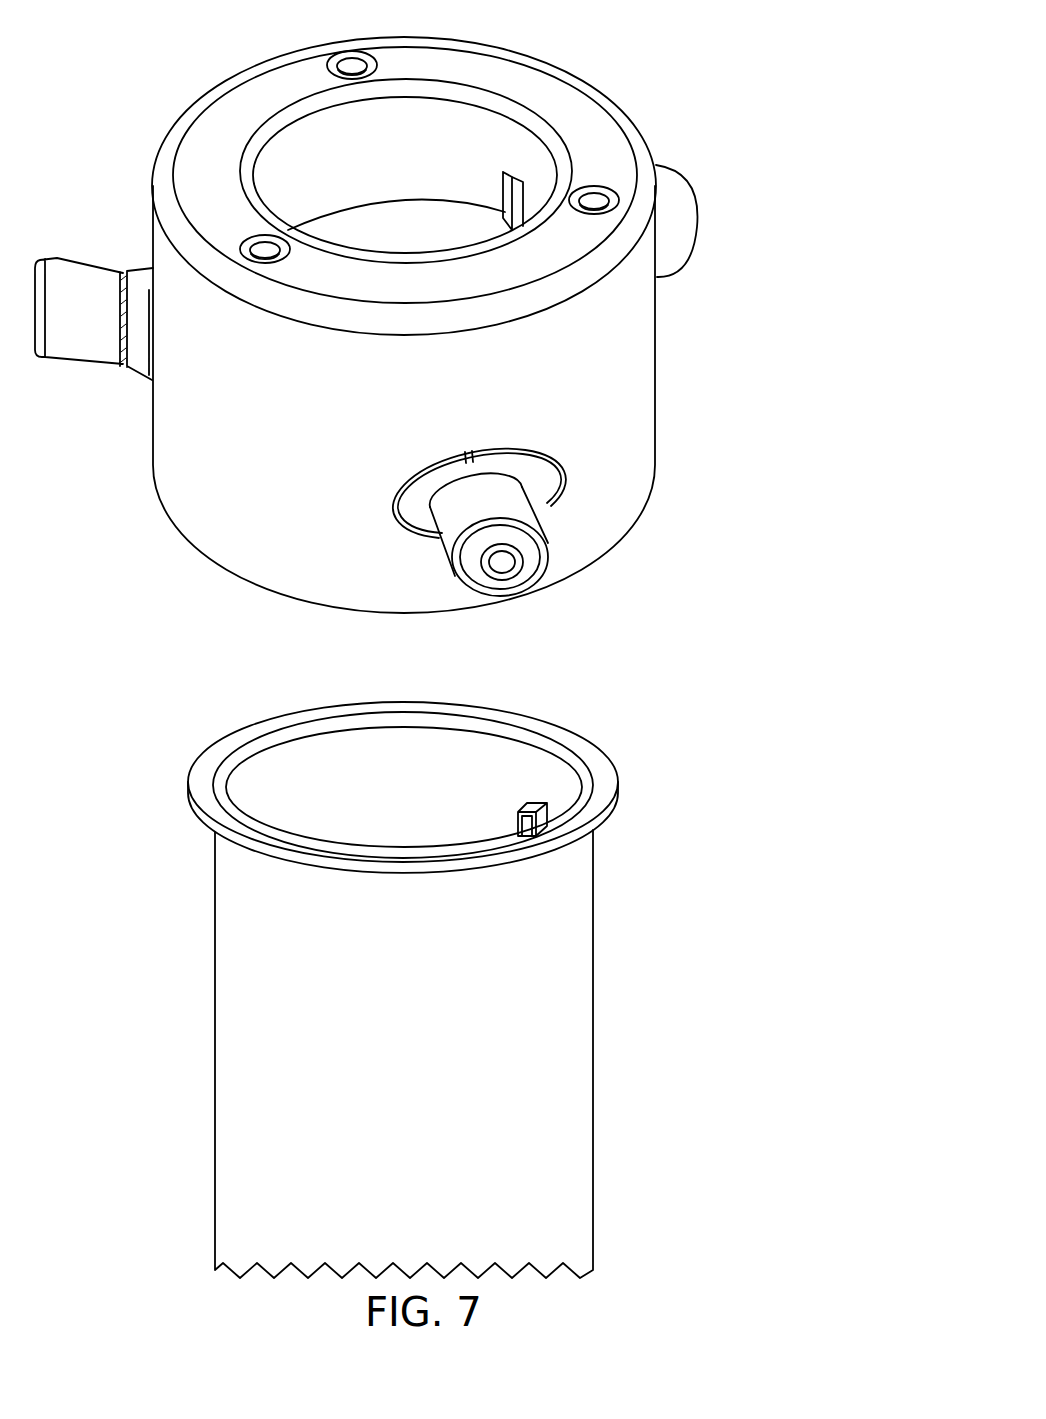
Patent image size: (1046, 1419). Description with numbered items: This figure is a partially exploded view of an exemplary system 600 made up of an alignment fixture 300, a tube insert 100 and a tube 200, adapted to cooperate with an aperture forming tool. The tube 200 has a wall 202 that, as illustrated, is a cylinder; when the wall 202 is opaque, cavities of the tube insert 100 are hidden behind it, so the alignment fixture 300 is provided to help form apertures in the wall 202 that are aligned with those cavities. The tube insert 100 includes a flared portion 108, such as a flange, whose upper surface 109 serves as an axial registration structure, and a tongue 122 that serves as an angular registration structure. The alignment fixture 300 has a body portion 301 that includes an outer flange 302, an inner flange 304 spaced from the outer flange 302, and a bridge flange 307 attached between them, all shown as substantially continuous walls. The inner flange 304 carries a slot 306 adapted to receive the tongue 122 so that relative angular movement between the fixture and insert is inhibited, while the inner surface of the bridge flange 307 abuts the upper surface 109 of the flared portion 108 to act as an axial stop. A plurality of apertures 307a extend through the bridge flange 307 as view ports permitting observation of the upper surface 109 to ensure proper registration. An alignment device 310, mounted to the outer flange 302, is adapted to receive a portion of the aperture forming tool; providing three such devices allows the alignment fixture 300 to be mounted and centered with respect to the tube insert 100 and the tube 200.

The system 600 is at (807, 727).
The alignment fixture 300 is at (680, 368).
The body portion 301 is at (657, 295).
The outer flange 302 is at (155, 440).
The inner flange 304 is at (393, 198).
The slot 306 is at (503, 192).
The bridge flange 307 is at (512, 72).
The apertures 307a is at (350, 67).
The alignment device 310 is at (563, 558).
The tube insert 100 is at (585, 713).
The flared portion 108 is at (612, 780).
The upper surface 109 is at (603, 802).
The tongue 122 is at (515, 815).
The tube 200 is at (193, 1045).
The wall 202 is at (585, 952).